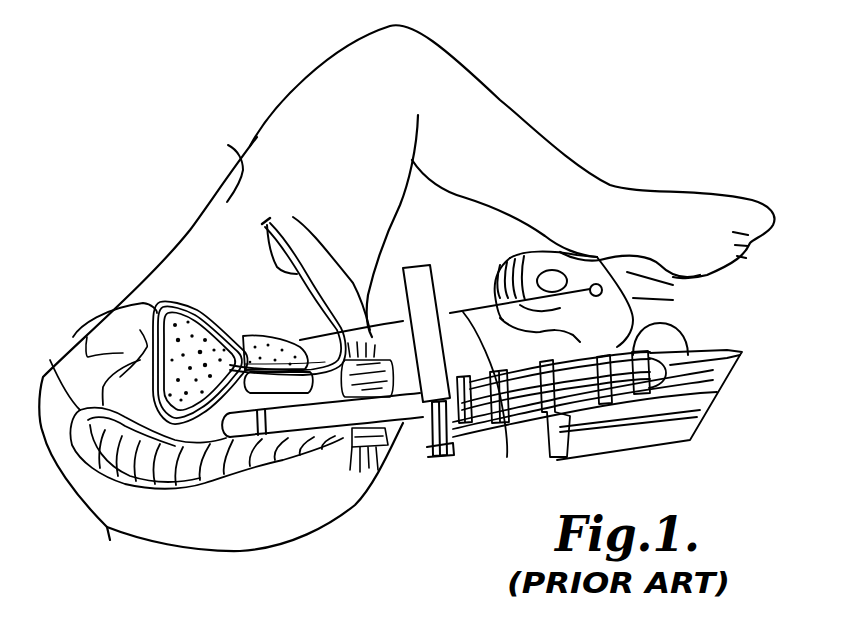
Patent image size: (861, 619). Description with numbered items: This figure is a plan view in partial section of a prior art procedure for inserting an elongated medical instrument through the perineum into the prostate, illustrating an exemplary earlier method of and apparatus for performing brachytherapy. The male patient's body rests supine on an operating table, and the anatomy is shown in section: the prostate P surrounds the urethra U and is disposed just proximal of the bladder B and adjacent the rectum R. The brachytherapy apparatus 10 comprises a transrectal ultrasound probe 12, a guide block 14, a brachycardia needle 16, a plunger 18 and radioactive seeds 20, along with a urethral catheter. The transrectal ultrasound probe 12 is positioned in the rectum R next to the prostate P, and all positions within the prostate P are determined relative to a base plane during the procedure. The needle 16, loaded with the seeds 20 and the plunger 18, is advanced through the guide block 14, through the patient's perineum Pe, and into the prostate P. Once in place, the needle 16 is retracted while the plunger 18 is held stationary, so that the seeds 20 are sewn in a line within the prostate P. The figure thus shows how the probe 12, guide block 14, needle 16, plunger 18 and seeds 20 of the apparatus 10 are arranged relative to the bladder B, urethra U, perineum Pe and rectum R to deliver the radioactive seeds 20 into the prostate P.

The brachytherapy apparatus 10 is at (712, 320).
The transrectal ultrasound probe 12 is at (419, 422).
The guide block 14 is at (427, 285).
The brachycardia needle 16 is at (503, 380).
The plunger 18 is at (582, 287).
The radioactive seeds 20 is at (243, 333).
The bladder B is at (182, 313).
The prostate P is at (275, 343).
The urethra U is at (287, 343).
The perineum Pe is at (370, 333).
The rectum R is at (408, 422).